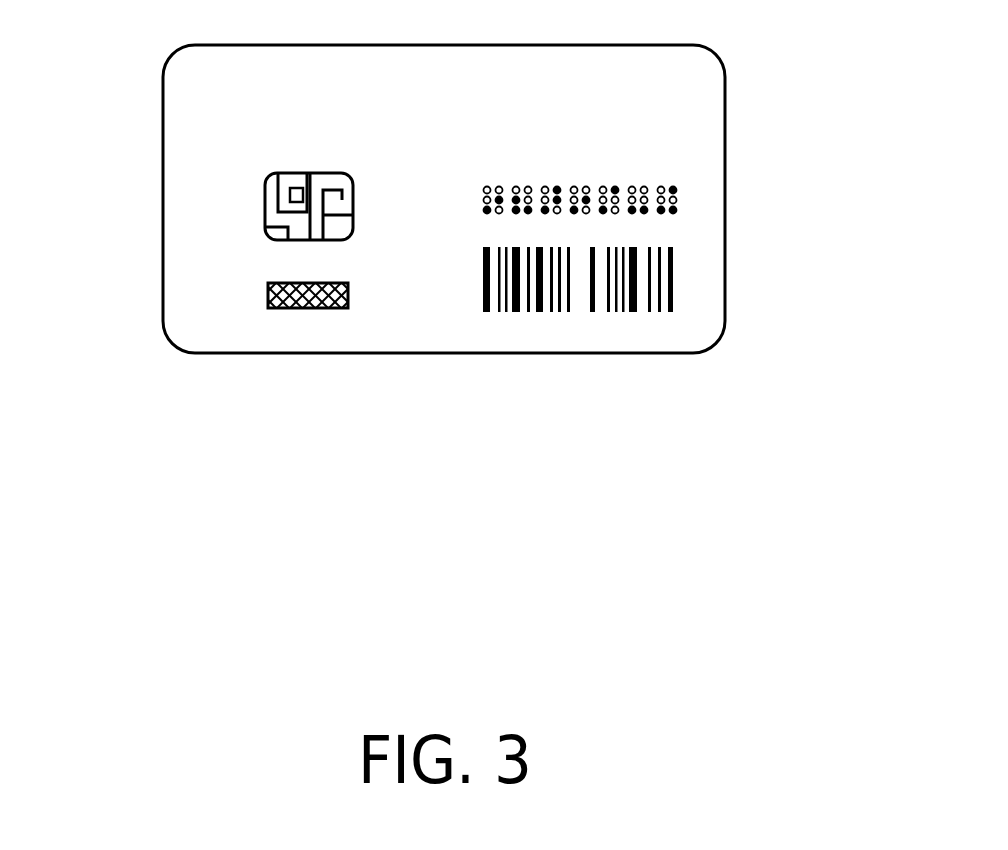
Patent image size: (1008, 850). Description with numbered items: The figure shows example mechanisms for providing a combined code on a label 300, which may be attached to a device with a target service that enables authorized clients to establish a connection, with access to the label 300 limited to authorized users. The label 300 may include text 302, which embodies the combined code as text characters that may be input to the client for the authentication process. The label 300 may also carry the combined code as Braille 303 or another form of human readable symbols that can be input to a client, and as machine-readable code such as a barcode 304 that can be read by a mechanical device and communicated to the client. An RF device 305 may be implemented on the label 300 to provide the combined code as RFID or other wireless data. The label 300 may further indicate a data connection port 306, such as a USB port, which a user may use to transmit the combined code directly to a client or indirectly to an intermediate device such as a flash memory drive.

The label 300 is at (653, 46).
The text 302 is at (699, 116).
The Braille 303 is at (703, 200).
The barcode 304 is at (713, 302).
The RF device 305 is at (223, 191).
The data connection port 306 is at (246, 302).